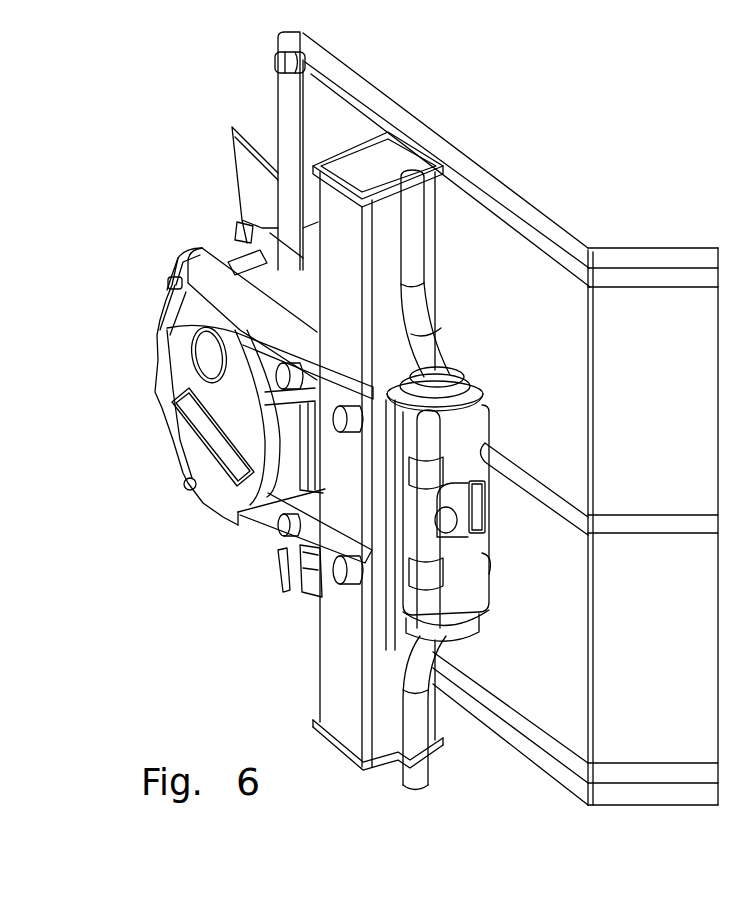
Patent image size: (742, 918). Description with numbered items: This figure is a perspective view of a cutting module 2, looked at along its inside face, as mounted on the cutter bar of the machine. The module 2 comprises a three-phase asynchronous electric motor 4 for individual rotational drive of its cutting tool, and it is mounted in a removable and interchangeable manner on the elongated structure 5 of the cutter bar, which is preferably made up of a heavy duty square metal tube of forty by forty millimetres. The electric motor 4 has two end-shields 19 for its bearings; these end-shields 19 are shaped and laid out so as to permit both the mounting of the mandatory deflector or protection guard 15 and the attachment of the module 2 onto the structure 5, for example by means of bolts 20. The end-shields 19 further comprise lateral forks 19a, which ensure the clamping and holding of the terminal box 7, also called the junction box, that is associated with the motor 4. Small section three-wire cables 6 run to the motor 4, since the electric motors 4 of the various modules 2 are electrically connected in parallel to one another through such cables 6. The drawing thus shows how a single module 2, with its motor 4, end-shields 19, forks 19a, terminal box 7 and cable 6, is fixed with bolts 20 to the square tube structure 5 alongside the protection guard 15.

The cutting module 2 is at (220, 553).
The three-phase asynchronous electric motor 4 is at (160, 437).
The elongated structure 5 is at (333, 229).
The three-wire cable 6 is at (428, 262).
The terminal box 7 is at (412, 535).
The deflector or protection guard 15 is at (532, 275).
The end-shield 19 is at (205, 490).
The lateral fork 19a is at (317, 373).
The bolt 20 is at (232, 248).